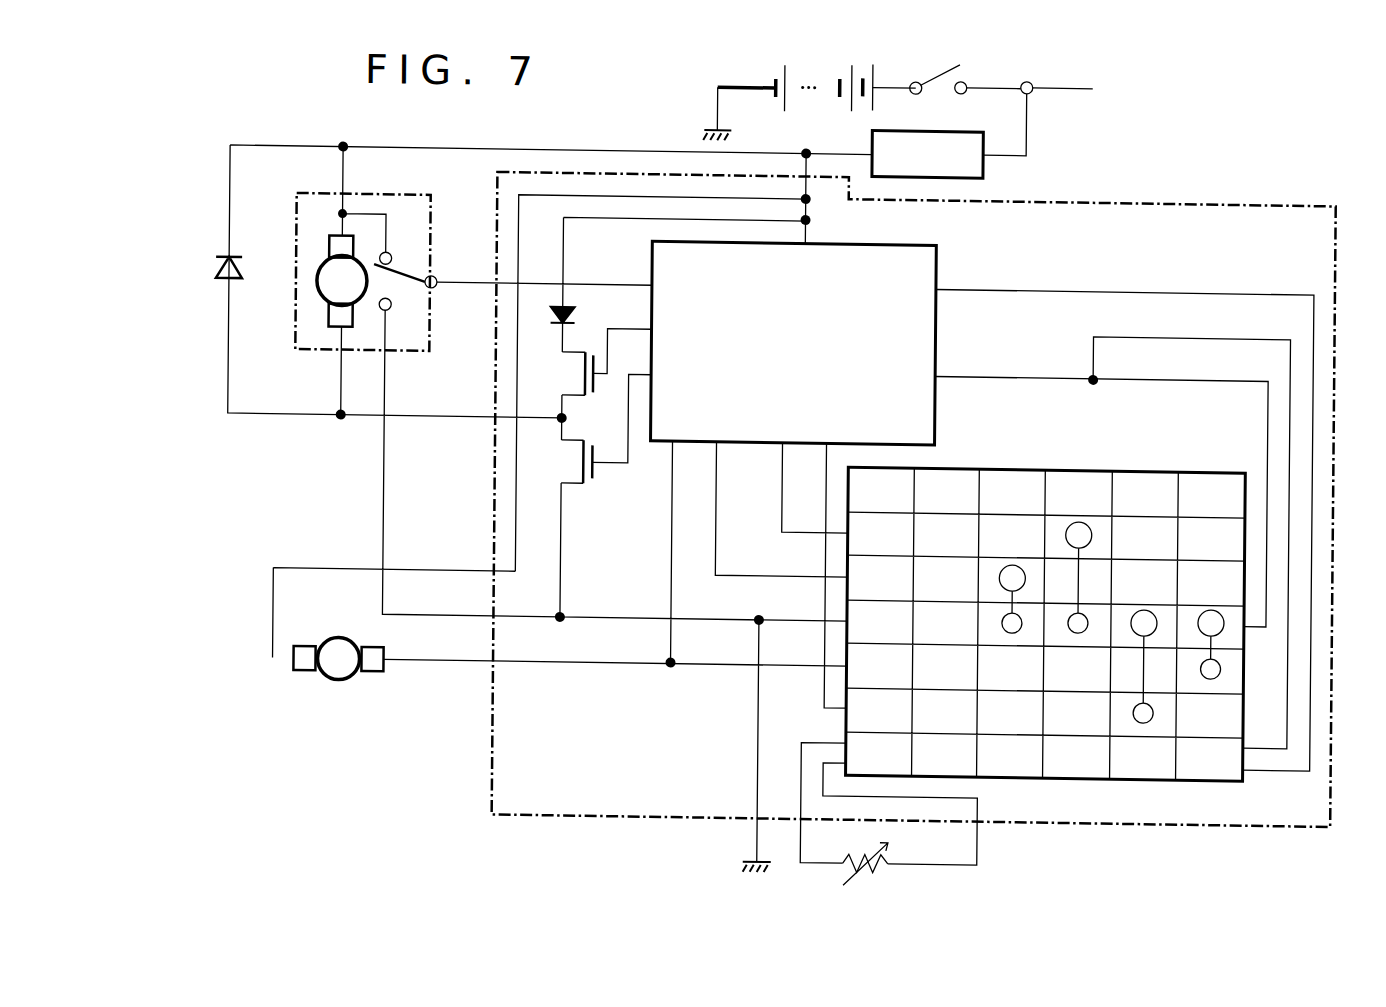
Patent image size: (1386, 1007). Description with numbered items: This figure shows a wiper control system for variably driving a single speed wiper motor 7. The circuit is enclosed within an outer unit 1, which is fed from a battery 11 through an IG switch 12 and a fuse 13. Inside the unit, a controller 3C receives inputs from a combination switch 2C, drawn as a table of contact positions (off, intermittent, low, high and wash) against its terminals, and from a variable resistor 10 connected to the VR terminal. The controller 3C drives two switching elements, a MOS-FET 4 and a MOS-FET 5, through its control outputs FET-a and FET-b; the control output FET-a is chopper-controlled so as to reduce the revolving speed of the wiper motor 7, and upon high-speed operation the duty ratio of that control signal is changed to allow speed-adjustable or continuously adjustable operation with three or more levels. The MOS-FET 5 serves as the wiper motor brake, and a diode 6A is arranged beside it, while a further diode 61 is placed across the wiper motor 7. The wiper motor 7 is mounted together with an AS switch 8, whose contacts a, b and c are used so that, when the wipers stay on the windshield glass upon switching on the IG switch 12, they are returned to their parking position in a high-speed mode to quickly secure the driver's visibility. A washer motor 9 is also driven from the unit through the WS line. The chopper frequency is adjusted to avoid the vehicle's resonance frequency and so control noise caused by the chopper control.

The wiper control unit 1 is at (1244, 195).
The wiper switch 2C is at (1159, 462).
The controller 3C is at (868, 240).
The MOS-FET 4 is at (570, 469).
The MOS-FET 5 is at (570, 377).
The diode 6A is at (570, 310).
The diode 61 is at (216, 265).
The wiper motor 7 is at (325, 274).
The AS switch 8 is at (408, 275).
The washer motor 9 is at (339, 643).
The variable resistor 10 is at (895, 850).
The battery 11 is at (834, 63).
The IG switch 12 is at (962, 75).
The fuse 13 is at (936, 128).